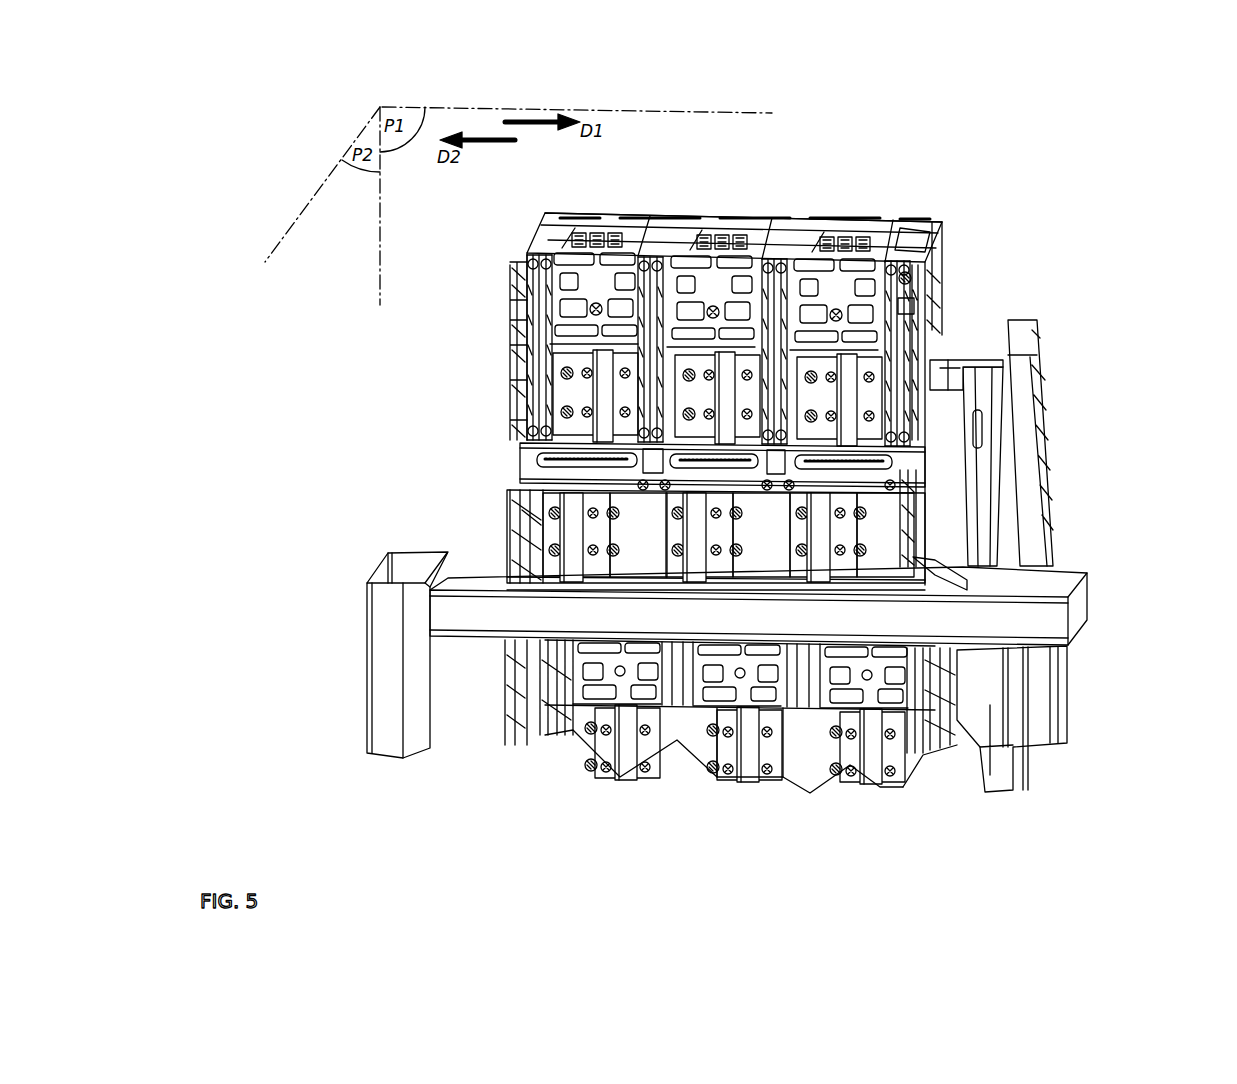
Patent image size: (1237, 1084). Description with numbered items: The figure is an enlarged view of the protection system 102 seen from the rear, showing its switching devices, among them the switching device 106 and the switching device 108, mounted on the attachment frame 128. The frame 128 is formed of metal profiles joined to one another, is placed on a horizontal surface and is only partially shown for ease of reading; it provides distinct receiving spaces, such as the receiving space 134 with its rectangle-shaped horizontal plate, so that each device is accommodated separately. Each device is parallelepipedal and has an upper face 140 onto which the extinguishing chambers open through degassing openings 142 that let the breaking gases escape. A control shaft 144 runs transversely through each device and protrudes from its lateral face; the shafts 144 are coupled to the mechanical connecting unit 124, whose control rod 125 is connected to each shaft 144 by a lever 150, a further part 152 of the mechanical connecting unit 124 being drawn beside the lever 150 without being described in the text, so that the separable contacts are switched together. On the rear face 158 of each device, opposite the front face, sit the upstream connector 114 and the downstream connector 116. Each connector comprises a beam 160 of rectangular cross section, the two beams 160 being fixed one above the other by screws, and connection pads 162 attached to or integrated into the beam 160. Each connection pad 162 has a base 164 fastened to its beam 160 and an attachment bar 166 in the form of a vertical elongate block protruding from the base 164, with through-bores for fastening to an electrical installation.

The protection system 102 is at (1050, 200).
The switching device 106 is at (545, 742).
The switching device 108 is at (528, 262).
The upstream connector 114 is at (555, 372).
The downstream connector 116 is at (540, 525).
The mechanical connecting unit 124 is at (1166, 325).
The control rod 125 is at (985, 398).
The attachment frame 128 is at (385, 655).
The receiving space 134 is at (1060, 582).
The upper face 140 is at (905, 250).
The degassing opening 142 is at (655, 237).
The control shaft 144 is at (950, 370).
The lever 150 is at (965, 356).
The bracket plate 152 is at (1018, 448).
The rear face 158 is at (518, 283).
The beam 160 is at (640, 505).
The connection pad 162 is at (723, 397).
The base 164 is at (713, 747).
The attachment bar 166 is at (745, 767).